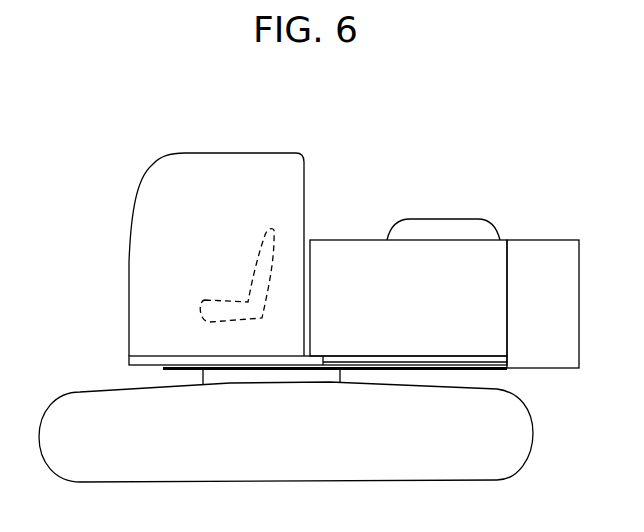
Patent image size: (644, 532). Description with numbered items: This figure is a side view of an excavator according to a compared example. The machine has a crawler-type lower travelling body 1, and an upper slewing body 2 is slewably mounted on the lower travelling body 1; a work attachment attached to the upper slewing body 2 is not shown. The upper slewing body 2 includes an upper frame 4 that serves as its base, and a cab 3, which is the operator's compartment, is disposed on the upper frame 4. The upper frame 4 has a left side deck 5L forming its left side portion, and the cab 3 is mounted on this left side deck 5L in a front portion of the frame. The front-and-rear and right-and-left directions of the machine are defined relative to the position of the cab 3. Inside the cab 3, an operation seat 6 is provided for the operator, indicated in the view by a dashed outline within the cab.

The lower travelling body 1 is at (533, 418).
The upper slewing body 2 is at (347, 238).
The cab 3 is at (262, 152).
The upper frame 4 is at (366, 370).
The left side deck 5L is at (129, 356).
The operation seat 6 is at (259, 229).